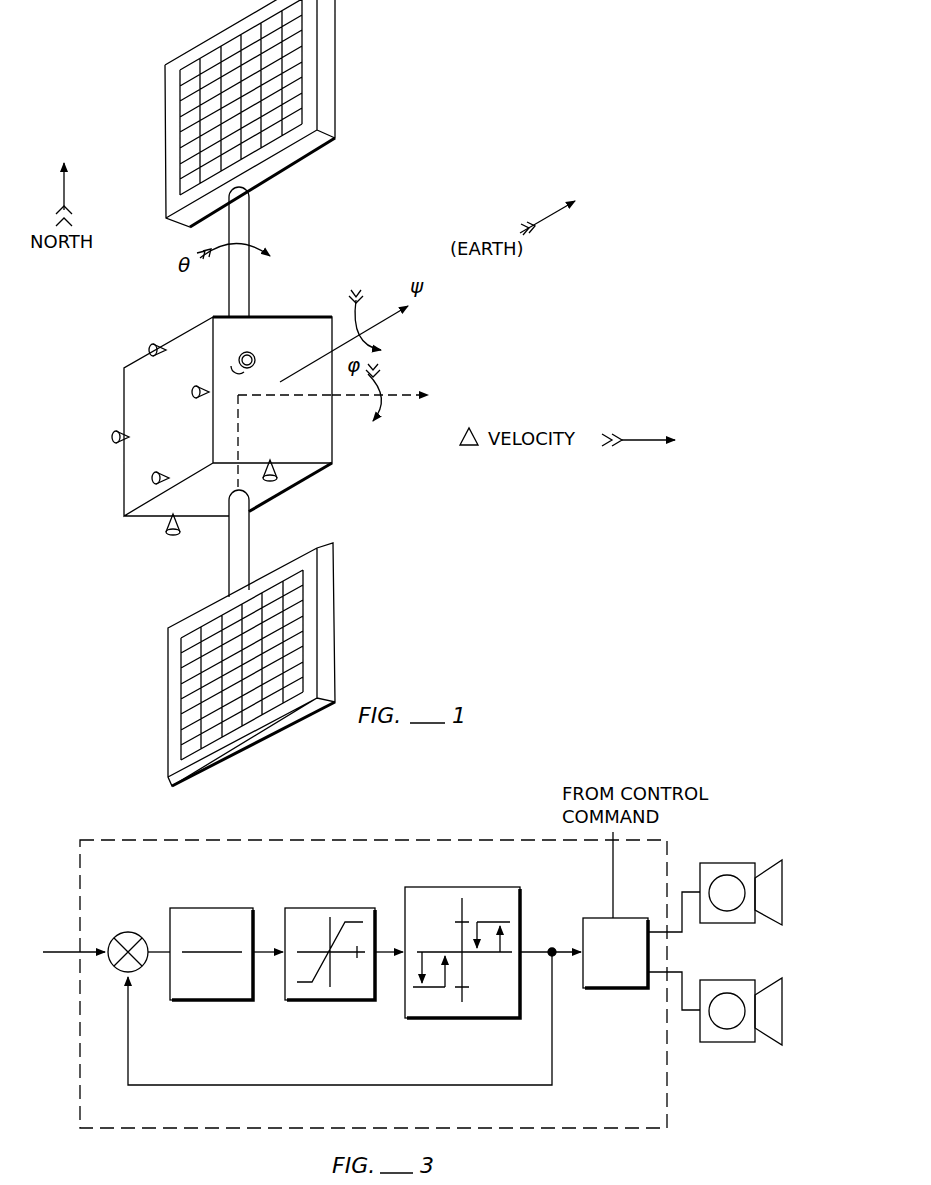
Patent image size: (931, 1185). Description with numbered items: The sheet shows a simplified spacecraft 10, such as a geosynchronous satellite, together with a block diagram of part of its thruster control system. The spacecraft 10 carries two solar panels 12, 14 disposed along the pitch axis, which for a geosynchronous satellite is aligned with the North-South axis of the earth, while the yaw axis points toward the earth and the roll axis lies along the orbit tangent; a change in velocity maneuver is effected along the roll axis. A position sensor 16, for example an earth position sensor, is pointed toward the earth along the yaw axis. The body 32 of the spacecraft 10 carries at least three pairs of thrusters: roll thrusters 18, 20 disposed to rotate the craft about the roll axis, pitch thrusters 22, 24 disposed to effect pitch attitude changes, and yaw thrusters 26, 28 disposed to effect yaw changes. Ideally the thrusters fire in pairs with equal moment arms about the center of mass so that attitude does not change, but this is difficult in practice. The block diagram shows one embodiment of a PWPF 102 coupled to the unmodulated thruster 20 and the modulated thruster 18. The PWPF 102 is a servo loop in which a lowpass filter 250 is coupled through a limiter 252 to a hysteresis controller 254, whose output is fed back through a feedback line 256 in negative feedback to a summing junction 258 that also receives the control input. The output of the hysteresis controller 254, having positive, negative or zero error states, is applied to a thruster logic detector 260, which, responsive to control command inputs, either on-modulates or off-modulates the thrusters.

In FIG. 1, the spacecraft 10 is at (83, 362).
In FIG. 1, the solar panel 12 is at (168, 672).
In FIG. 1, the solar panel 14 is at (166, 80).
In FIG. 1, the position sensor 16 is at (240, 358).
In FIG. 1, the roll thruster 18 is at (171, 534).
In FIG. 3, the roll thruster 18 is at (700, 1042).
In FIG. 1, the roll thruster 20 is at (280, 475).
In FIG. 3, the roll thruster 20 is at (700, 864).
In FIG. 1, the pitch thruster 22 is at (194, 392).
In FIG. 1, the pitch thruster 24 is at (116, 441).
In FIG. 1, the yaw thruster 26 is at (154, 480).
In FIG. 1, the yaw thruster 28 is at (150, 350).
In FIG. 1, the spacecraft body 32 is at (313, 313).
In FIG. 3, the PWPF 102 is at (295, 840).
In FIG. 3, the lowpass filter 250 is at (212, 908).
In FIG. 3, the limiter 252 is at (338, 908).
In FIG. 3, the hysteresis controller 254 is at (455, 887).
In FIG. 3, the feedback line 256 is at (205, 1085).
In FIG. 3, the summing junction 258 is at (152, 934).
In FIG. 3, the thruster logic detector 260 is at (610, 988).